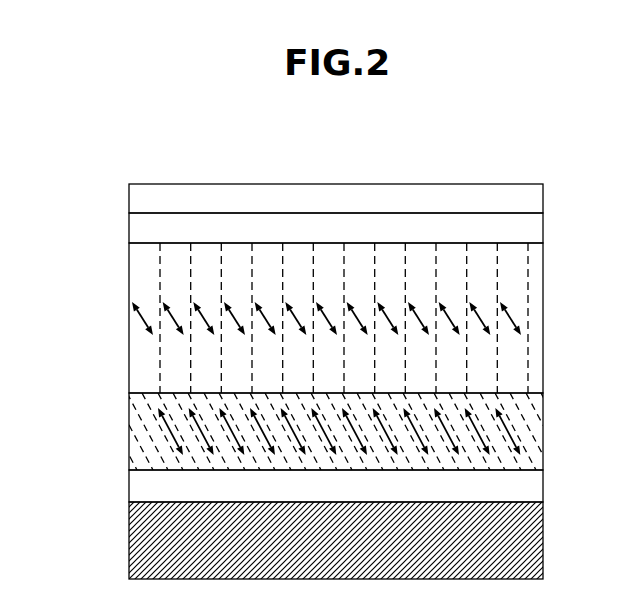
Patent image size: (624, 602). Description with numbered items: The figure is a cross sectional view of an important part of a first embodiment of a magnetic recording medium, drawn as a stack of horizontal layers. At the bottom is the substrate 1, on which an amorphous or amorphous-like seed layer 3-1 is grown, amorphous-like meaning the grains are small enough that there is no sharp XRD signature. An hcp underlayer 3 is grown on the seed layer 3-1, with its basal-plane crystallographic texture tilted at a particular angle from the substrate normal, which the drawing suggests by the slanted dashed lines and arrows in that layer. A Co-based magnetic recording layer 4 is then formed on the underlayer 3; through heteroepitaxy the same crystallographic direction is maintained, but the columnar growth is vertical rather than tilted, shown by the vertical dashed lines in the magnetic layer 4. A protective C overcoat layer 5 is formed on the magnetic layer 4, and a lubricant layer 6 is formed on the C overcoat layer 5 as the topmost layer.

The lubricant layer 6 is at (145, 191).
The C overcoat layer 5 is at (145, 227).
The magnetic layer 4 is at (145, 336).
The underlayer 3 is at (141, 414).
The seed layer 3-1 is at (145, 484).
The substrate 1 is at (145, 544).